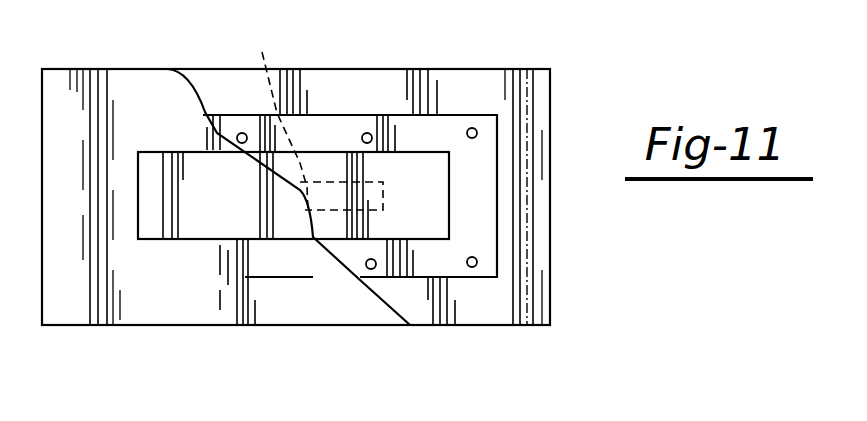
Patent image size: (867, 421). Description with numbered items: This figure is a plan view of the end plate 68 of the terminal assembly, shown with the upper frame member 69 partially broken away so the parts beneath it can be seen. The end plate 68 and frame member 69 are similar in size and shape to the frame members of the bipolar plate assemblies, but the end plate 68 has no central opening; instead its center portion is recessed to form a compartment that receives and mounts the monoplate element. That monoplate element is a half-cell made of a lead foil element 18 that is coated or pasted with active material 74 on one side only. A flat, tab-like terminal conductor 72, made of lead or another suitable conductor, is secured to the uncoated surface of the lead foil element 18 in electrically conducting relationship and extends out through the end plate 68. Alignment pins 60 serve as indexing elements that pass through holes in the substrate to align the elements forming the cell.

The lead foil element 18 is at (468, 235).
The alignment pins 60 is at (472, 128).
The end plate 68 is at (533, 95).
The frame member 69 is at (115, 80).
The terminal conductor 72 is at (315, 113).
The active material 74 is at (338, 152).